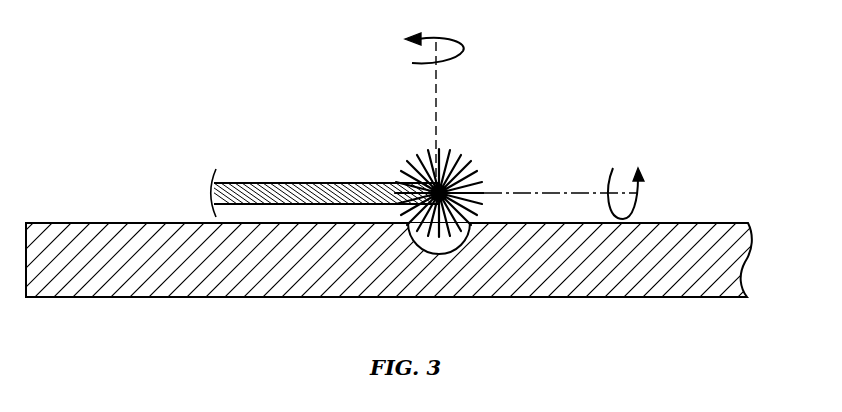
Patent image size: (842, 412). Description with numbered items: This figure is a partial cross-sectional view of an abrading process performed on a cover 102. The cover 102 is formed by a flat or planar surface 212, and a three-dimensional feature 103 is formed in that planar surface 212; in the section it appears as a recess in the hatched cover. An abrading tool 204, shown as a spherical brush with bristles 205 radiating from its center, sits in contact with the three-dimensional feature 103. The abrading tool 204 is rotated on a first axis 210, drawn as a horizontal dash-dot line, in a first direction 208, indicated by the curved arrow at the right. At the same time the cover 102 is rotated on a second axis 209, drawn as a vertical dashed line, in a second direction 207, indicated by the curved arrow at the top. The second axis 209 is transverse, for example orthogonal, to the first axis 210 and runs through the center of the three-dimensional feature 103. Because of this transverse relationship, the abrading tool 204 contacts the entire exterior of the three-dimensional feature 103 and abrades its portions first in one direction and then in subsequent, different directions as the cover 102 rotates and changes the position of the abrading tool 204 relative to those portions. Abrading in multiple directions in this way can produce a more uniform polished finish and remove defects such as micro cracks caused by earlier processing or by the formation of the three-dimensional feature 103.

The cover 102 is at (750, 261).
The three-dimensional feature 103 is at (444, 242).
The abrading tool 204 is at (499, 149).
The bristles 205 is at (481, 187).
The second direction 207 is at (463, 51).
The first direction 208 is at (640, 190).
The second axis 209 is at (436, 118).
The first axis 210 is at (582, 193).
The planar surface 212 is at (728, 222).